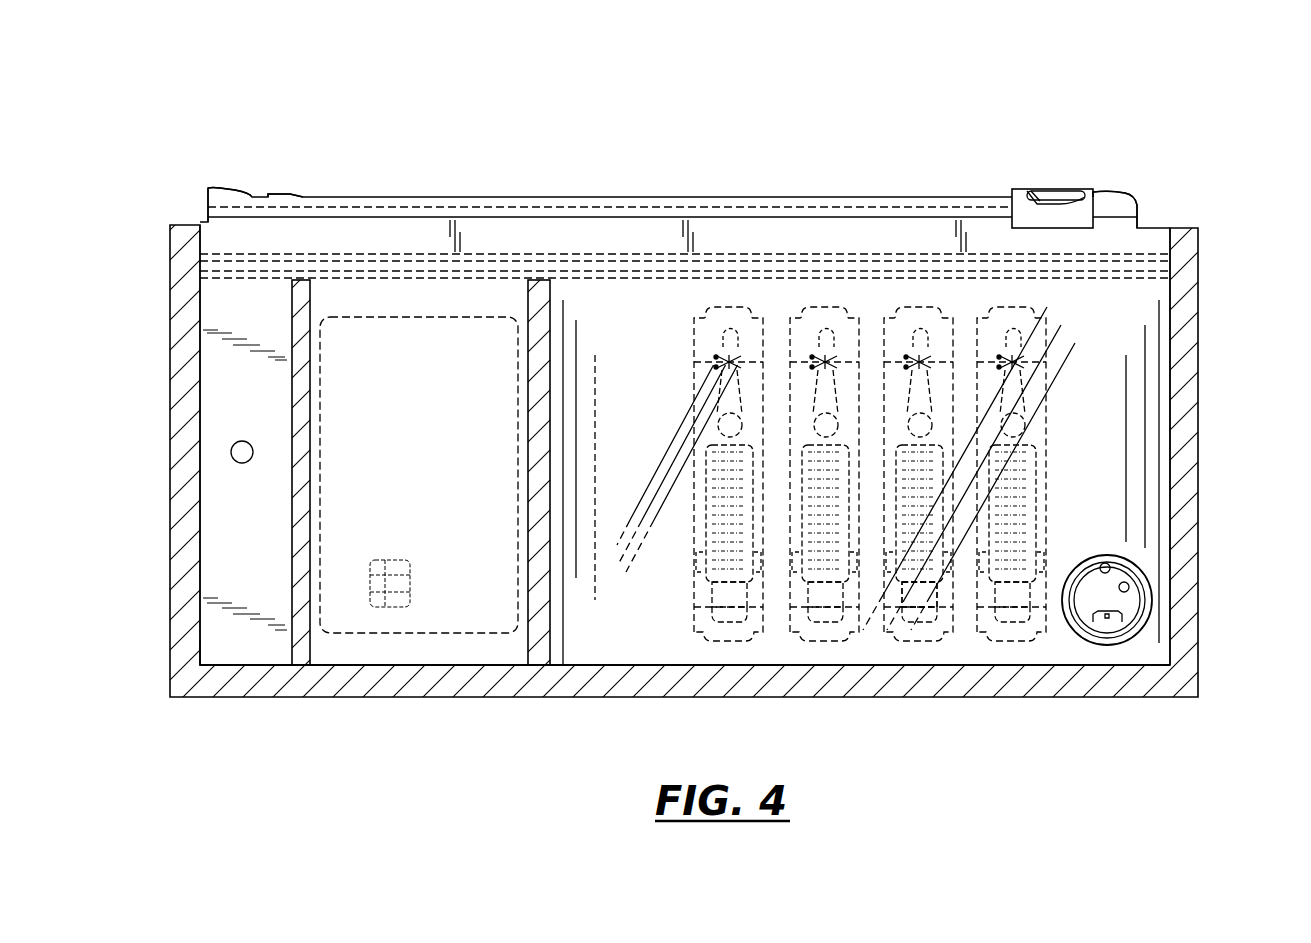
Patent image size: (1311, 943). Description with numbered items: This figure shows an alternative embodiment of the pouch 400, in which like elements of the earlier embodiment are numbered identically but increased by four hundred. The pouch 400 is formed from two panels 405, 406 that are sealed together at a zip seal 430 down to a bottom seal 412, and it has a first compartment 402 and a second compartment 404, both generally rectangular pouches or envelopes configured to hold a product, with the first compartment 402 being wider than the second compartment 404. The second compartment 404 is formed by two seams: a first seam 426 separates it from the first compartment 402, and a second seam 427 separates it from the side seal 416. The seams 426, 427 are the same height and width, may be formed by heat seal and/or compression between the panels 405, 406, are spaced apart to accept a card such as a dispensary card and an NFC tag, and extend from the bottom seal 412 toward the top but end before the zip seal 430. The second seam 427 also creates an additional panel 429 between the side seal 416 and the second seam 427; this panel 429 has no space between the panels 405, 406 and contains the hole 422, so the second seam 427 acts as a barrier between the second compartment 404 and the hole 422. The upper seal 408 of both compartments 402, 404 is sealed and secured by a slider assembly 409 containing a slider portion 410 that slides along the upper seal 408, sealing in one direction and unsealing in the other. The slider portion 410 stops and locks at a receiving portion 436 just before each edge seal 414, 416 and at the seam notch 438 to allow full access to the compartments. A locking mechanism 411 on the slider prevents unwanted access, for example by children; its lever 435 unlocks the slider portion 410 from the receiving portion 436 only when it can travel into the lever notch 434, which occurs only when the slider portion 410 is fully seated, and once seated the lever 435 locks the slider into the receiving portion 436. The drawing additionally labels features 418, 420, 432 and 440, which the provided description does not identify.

The pouch 400 is at (140, 152).
The first compartment 402 is at (645, 633).
The second compartment 404 is at (453, 647).
The panel 405 is at (656, 339).
The panel 406 is at (1213, 428).
The upper seal 408 is at (956, 203).
The slider assembly 409 is at (1141, 180).
The slider portion 410 is at (1022, 210).
The locking mechanism 411 is at (1047, 203).
The bottom seal 412 is at (757, 680).
The edge seal 414 is at (1183, 492).
The side seal 416 is at (185, 372).
The information card 418 is at (330, 348).
The timer dial 420 is at (1108, 600).
The hole 422 is at (240, 455).
The first seam 426 is at (540, 558).
The second seam 427 is at (300, 640).
The panel 429 is at (222, 630).
The zip seal 430 is at (845, 252).
The lid gasket 432 is at (612, 232).
The lever notch 434 is at (287, 202).
The lever 435 is at (1070, 195).
The receiving portion 436 is at (222, 194).
The seam notch 438 is at (200, 222).
The plunger 440 is at (922, 593).